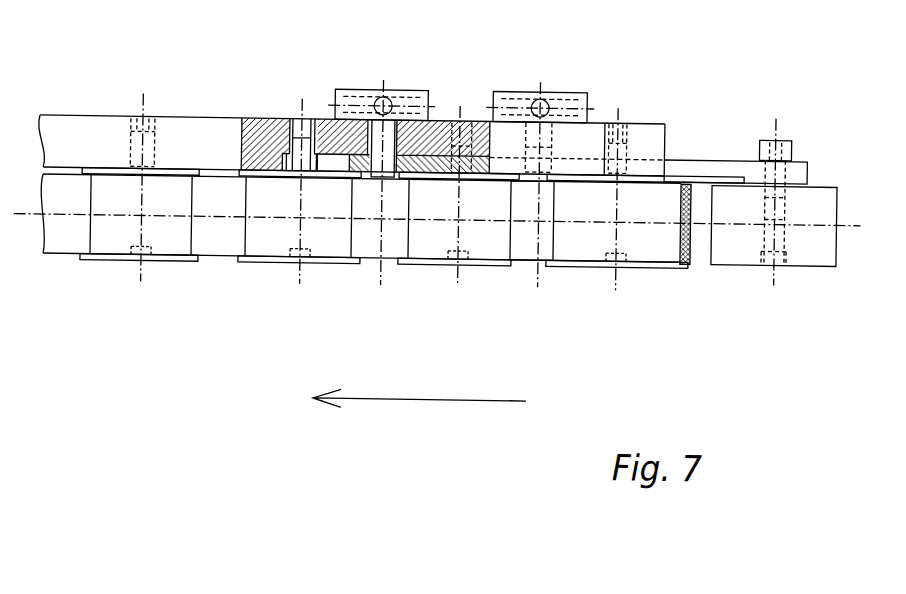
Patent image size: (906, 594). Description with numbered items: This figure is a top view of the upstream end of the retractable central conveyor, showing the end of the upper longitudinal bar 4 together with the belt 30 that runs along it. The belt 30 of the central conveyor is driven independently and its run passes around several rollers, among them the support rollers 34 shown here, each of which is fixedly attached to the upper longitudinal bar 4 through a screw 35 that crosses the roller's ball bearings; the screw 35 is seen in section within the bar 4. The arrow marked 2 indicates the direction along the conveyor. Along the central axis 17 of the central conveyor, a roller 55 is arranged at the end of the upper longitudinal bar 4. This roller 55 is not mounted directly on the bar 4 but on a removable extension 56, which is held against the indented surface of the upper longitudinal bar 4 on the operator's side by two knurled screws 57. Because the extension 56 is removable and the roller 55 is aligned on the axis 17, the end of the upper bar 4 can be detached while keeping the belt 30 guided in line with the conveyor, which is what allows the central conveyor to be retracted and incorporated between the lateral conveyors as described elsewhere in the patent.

The conveying direction arrow 2 is at (432, 394).
The upper longitudinal bar 4 is at (652, 134).
The central axis 17 is at (527, 216).
The belt 30 is at (62, 232).
The support rollers 34 is at (262, 256).
The screw 35 is at (302, 115).
The roller 55 is at (815, 239).
The removable extension 56 is at (713, 157).
The knurled screws 57 is at (403, 85).